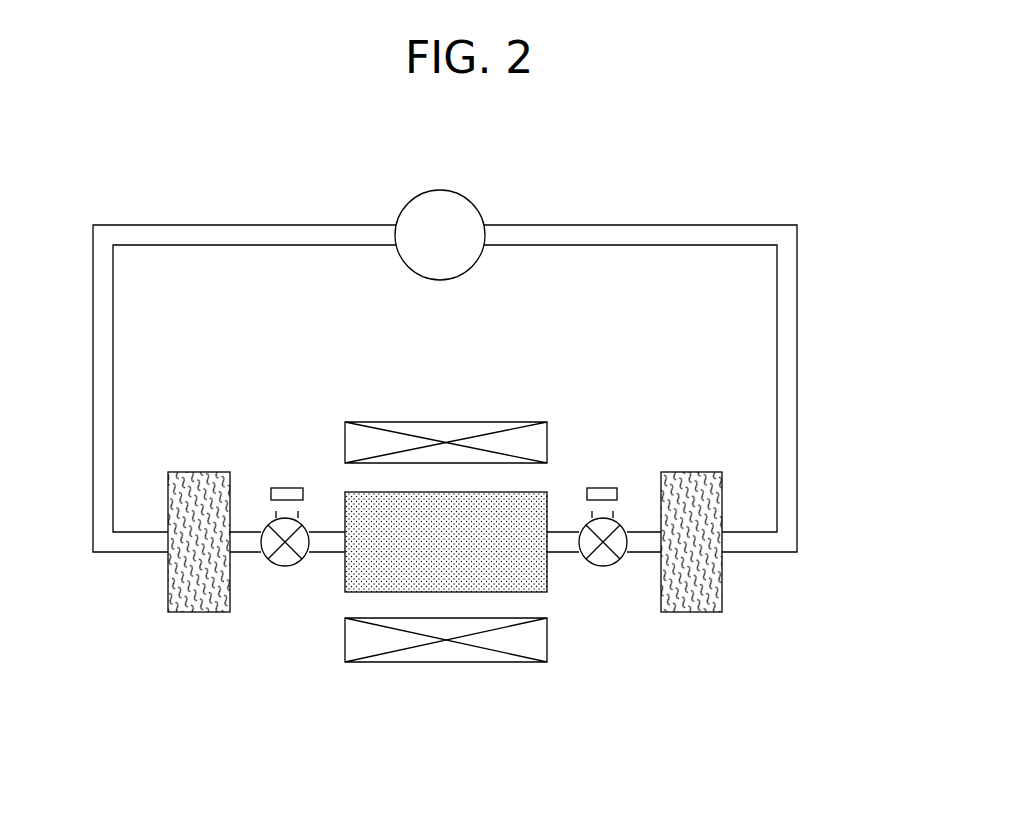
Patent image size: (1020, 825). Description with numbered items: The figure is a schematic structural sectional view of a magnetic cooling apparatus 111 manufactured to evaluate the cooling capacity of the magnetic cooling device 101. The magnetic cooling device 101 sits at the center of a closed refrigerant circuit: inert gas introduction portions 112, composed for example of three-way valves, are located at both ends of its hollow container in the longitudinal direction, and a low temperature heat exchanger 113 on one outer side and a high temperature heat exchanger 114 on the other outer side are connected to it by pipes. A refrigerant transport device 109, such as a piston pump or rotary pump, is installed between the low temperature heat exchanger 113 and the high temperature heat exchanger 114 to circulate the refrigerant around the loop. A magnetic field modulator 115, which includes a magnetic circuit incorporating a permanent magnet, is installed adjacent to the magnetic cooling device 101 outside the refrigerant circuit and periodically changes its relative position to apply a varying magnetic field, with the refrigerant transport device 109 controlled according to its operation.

The magnetic cooling device 101 is at (550, 491).
The refrigerant transport device 109 is at (485, 211).
The magnetic cooling apparatus 111 is at (272, 175).
The inert gas introduction portion 112 is at (285, 569).
The low temperature heat exchanger 113 is at (197, 613).
The high temperature heat exchanger 114 is at (697, 613).
The magnetic field modulator 115 is at (442, 681).